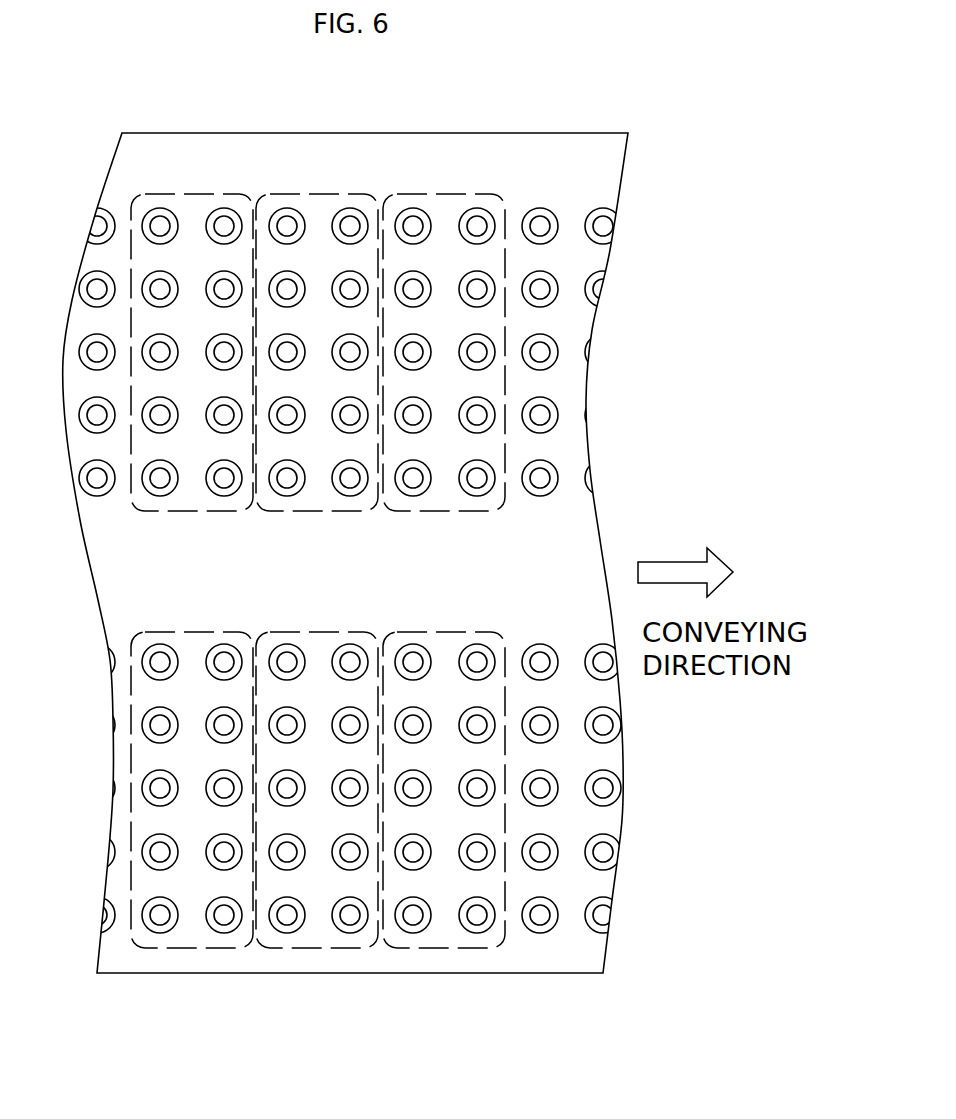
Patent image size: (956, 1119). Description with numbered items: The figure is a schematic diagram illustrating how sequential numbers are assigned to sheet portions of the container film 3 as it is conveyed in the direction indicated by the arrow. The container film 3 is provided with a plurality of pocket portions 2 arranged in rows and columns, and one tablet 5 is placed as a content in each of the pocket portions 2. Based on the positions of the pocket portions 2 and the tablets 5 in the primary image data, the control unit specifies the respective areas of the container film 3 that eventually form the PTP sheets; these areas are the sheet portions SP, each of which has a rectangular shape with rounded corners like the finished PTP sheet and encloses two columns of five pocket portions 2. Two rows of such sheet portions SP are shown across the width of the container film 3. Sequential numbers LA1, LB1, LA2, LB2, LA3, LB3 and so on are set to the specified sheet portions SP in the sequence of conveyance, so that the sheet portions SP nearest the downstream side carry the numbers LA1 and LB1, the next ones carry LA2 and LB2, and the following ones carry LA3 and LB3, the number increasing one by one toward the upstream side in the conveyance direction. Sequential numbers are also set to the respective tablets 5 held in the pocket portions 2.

The container film 3 is at (583, 173).
The pocket portion 2 is at (551, 238).
The tablet 5 is at (545, 294).
The sequential number LA1 is at (444, 337).
The sequential number LA2 is at (317, 337).
The sequential number LA3 is at (192, 337).
The sequential number LB1 is at (444, 774).
The sequential number LB2 is at (317, 774).
The sequential number LB3 is at (192, 774).
The sheet portion SP is at (160, 511).